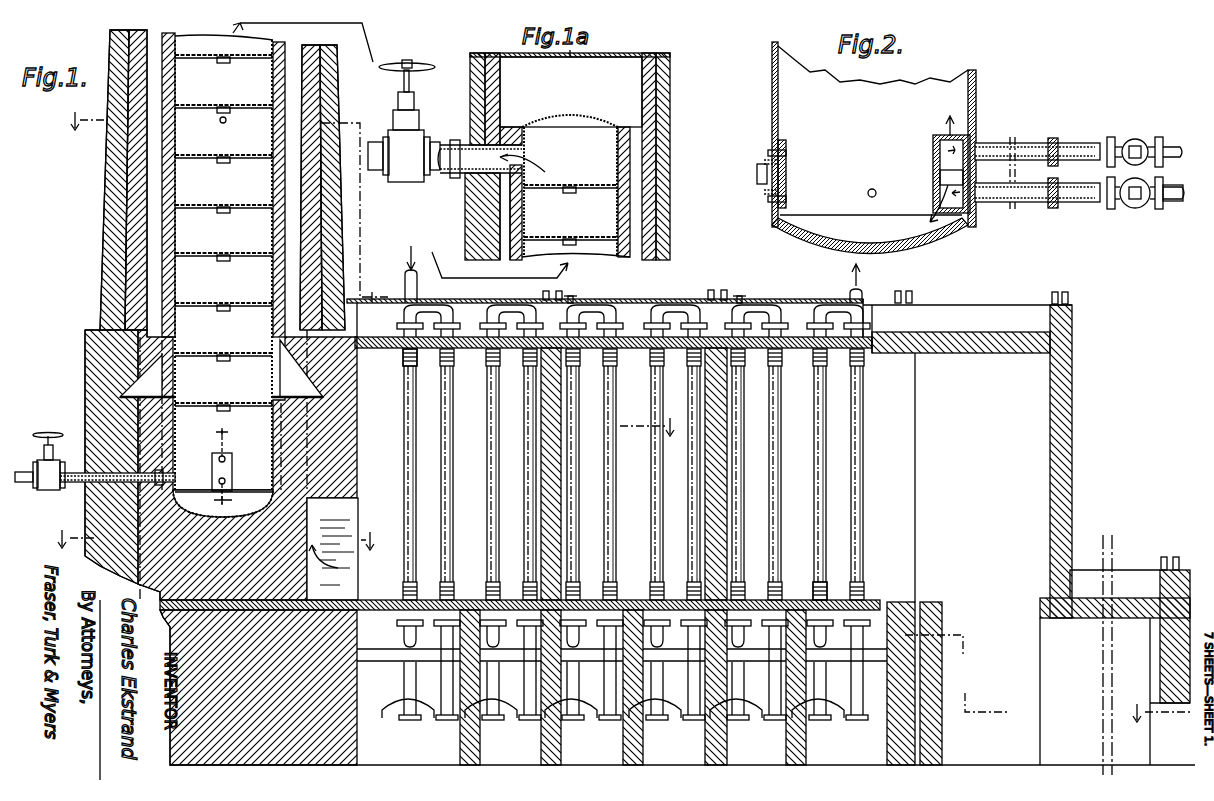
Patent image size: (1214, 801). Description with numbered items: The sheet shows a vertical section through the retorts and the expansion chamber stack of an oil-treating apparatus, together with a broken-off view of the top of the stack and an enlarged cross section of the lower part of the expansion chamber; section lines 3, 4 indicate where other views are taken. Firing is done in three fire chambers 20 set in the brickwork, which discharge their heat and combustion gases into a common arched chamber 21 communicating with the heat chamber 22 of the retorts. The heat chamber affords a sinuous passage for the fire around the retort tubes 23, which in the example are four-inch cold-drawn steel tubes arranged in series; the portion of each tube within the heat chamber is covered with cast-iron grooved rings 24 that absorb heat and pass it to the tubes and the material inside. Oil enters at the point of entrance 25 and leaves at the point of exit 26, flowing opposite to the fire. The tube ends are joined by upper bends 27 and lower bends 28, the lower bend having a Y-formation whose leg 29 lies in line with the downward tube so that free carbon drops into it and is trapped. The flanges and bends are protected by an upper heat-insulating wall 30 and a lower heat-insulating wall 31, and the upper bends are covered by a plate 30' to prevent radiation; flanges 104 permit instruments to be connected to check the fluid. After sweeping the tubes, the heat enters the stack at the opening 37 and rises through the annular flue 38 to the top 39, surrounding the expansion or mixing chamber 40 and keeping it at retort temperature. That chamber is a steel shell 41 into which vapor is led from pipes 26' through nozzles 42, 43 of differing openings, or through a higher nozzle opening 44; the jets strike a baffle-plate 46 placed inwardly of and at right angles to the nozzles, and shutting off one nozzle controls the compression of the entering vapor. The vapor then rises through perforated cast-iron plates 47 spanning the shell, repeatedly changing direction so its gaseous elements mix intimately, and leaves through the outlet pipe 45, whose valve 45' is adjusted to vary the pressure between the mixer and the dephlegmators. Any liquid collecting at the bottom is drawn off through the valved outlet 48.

In FIG. 1, the section line 3 is at (79, 121).
In FIG. 1, the section line 4 is at (357, 485).
In FIG. 1, the fire chamber 20 is at (1047, 655).
In FIG. 1, the common arched chamber 21 is at (1020, 461).
In FIG. 1, the heat chamber 22 is at (967, 453).
In FIG. 1, the retort tube 23 is at (820, 525).
In FIG. 1, the cast-iron grooved rings 24 is at (410, 362).
In FIG. 1, the point of entrance 25 is at (405, 290).
In FIG. 1, the point of exit 26 is at (841, 283).
In FIG. 2, the pipe 26' is at (1183, 180).
In FIG. 1, the upper bend 27 is at (702, 306).
In FIG. 1, the lower bend 28 is at (404, 634).
In FIG. 1, the leg of the Y 29 is at (404, 681).
In FIG. 1, the upper heat-insulating wall 30 is at (622, 361).
In FIG. 1, the plate 30' is at (605, 307).
In FIG. 1, the lower heat-insulating wall 31 is at (866, 600).
In FIG. 1, the opening 37 is at (340, 510).
In FIG. 1, the annular flue 38 is at (298, 103).
In FIG. 1A, the annular flue 38 is at (638, 212).
In FIG. 1A, the top of the stack 39 is at (571, 88).
In FIG. 1, the expansion or mixing chamber 40 is at (276, 84).
In FIG. 1, the steel shell 41 is at (273, 284).
In FIG. 1A, the steel shell 41 is at (616, 150).
In FIG. 2, the steel shell 41 is at (976, 88).
In FIG. 1, the nozzle 42 is at (220, 456).
In FIG. 2, the nozzle 42 is at (988, 142).
In FIG. 1, the nozzle 43 is at (218, 480).
In FIG. 2, the nozzle 43 is at (996, 204).
In FIG. 1, the nozzle opening 44 is at (235, 127).
In FIG. 1A, the outlet pipe 45 is at (491, 139).
In FIG. 1A, the valve 45' is at (404, 134).
In FIG. 1, the baffle-plate 46 is at (231, 470).
In FIG. 2, the baffle-plate 46 is at (930, 150).
In FIG. 1, the perforated cast-iron plates 47 is at (197, 208).
In FIG. 1A, the perforated cast-iron plates 47 is at (602, 237).
In FIG. 1, the valved outlet 48 is at (80, 470).
In FIG. 2, the valved outlet 48 is at (868, 192).
In FIG. 1, the flanges 104 is at (580, 303).